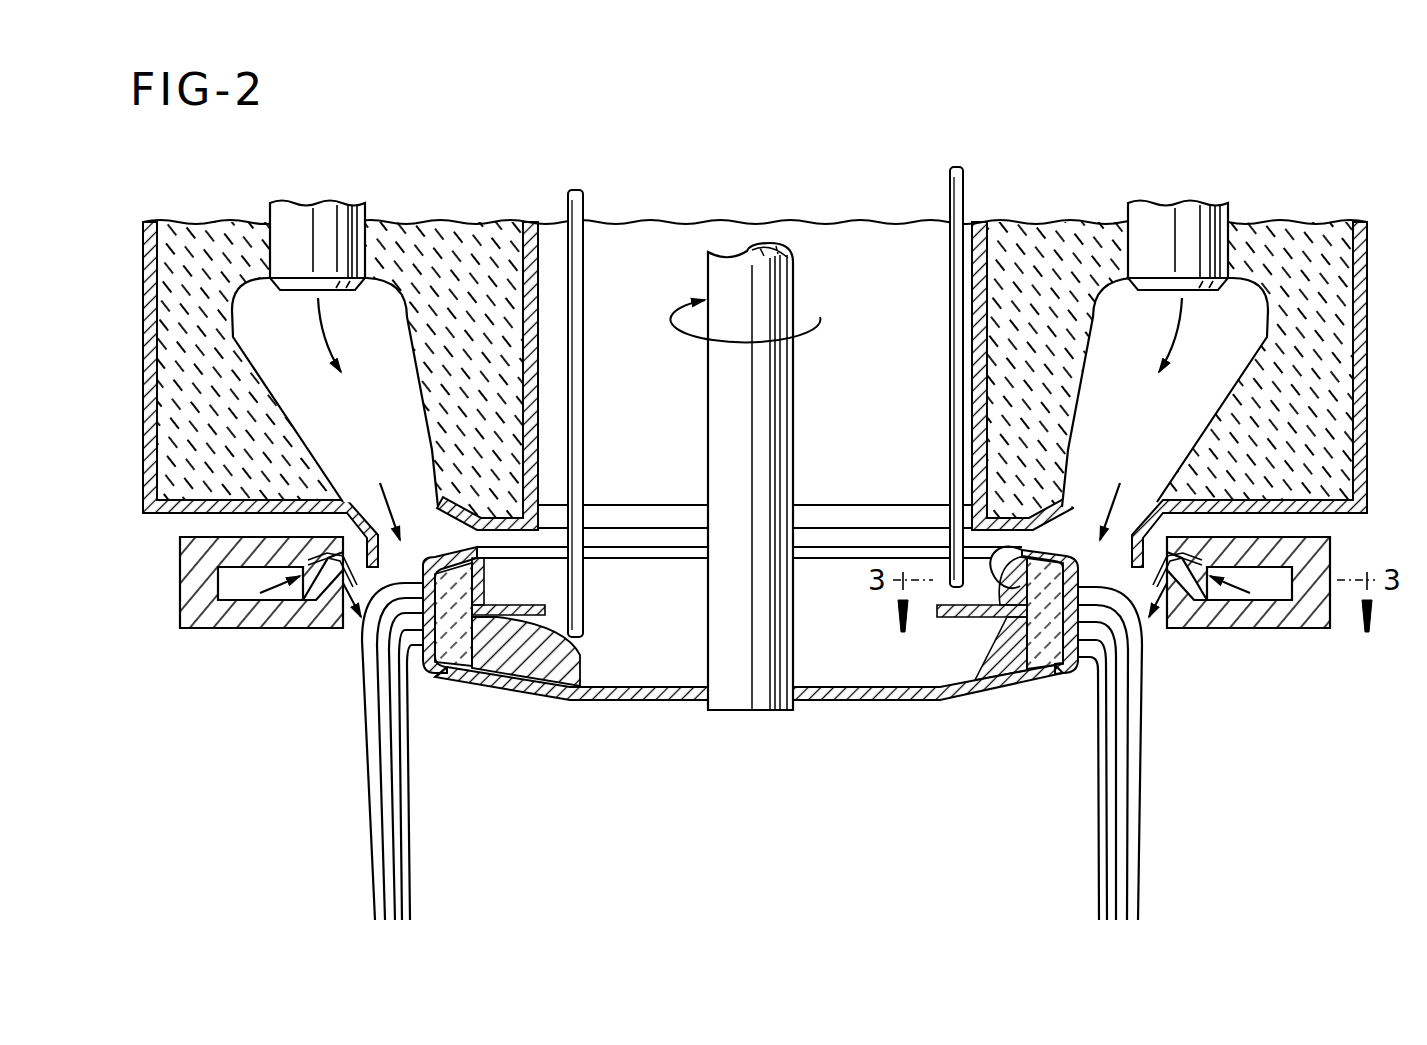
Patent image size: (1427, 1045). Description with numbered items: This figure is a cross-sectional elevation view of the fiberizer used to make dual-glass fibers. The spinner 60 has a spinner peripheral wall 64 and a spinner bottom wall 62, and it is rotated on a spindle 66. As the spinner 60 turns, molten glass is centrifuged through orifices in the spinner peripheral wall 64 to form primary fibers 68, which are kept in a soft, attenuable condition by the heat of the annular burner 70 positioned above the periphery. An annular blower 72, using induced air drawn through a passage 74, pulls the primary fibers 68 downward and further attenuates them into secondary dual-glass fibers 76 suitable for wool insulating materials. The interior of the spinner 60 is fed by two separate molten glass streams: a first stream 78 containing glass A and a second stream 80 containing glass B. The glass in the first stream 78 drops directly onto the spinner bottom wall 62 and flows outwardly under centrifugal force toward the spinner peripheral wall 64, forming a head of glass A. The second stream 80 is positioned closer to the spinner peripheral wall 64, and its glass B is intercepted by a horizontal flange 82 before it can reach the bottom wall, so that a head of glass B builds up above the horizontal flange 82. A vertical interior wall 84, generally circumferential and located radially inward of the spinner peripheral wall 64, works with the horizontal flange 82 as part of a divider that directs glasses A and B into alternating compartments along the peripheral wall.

The spinner 60 is at (843, 543).
The spinner bottom wall 62 is at (1045, 692).
The spinner peripheral wall 64 is at (458, 680).
The spindle 66 is at (793, 273).
The primary fibers 68 is at (378, 660).
The annular burner 70 is at (367, 248).
The annular blower 72 is at (177, 603).
The passage 74 is at (222, 523).
The secondary dual-glass fibers 76 is at (352, 813).
The first stream 78 is at (583, 207).
The second stream 80 is at (965, 190).
The horizontal flange 82 is at (968, 617).
The vertical interior wall 84 is at (993, 650).
The glass A is at (535, 672).
The glass B is at (1000, 540).